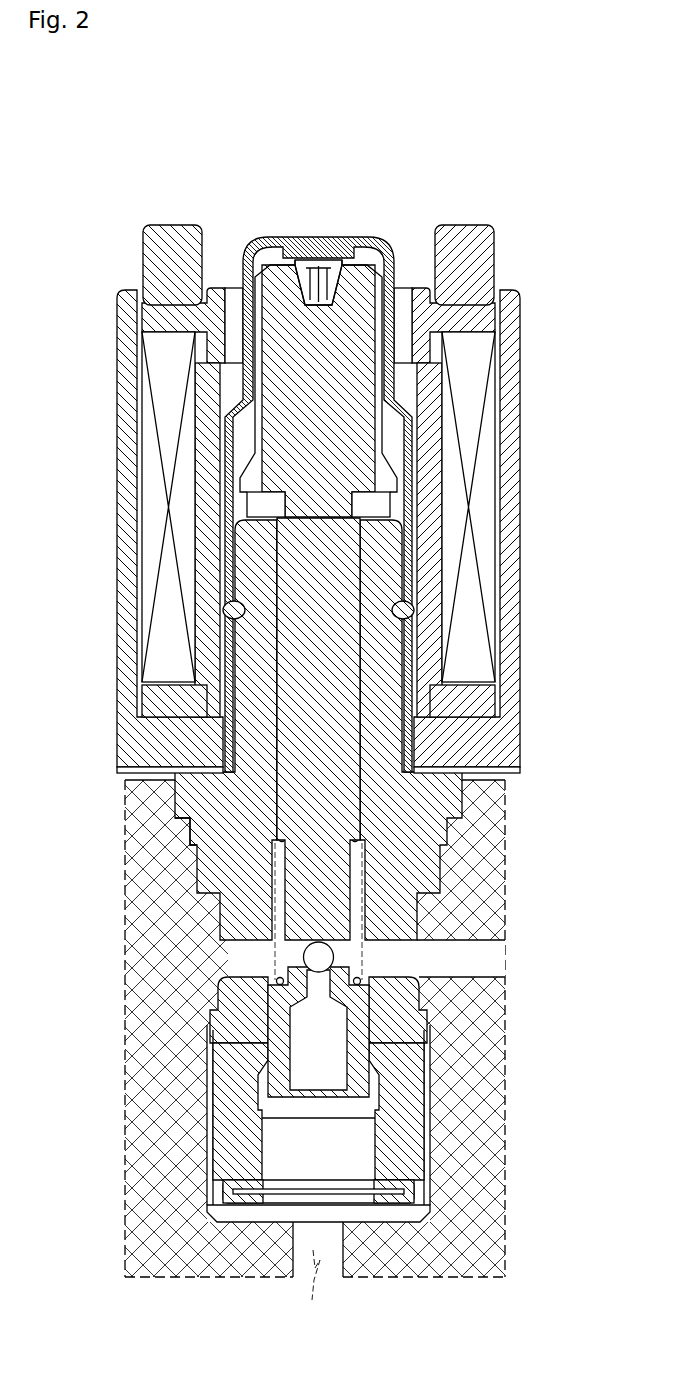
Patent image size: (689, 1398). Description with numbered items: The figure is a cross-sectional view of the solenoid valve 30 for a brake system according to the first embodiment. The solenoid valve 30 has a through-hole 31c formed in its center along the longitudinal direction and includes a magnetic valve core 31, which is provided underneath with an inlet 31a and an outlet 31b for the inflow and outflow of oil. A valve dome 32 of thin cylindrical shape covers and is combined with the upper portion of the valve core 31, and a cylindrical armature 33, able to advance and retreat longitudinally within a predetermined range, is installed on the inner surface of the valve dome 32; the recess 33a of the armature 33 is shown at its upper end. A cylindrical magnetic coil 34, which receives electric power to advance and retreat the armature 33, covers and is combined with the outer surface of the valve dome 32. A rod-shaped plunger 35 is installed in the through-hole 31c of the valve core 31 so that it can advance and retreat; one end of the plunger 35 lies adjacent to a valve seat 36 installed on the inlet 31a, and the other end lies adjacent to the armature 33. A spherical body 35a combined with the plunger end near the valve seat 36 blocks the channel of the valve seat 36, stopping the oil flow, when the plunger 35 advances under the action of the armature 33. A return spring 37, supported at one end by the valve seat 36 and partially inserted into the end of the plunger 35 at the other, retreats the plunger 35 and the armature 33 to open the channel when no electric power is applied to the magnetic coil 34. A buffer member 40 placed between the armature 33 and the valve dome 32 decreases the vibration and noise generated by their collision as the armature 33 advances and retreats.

The solenoid valve 30 is at (500, 116).
The magnetic valve core 31 is at (177, 793).
The inlet 31a is at (300, 1127).
The outlet 31b is at (383, 973).
The through-hole 31c is at (303, 573).
The valve dome 32 is at (283, 272).
The armature 33 is at (256, 270).
The cap recess 33a is at (316, 262).
The magnetic coil 34 is at (153, 517).
The plunger 35 is at (300, 648).
The spherical body 35a is at (312, 957).
The valve seat 36 is at (277, 1032).
The return spring 37 is at (188, 845).
The buffer member 40 is at (321, 268).